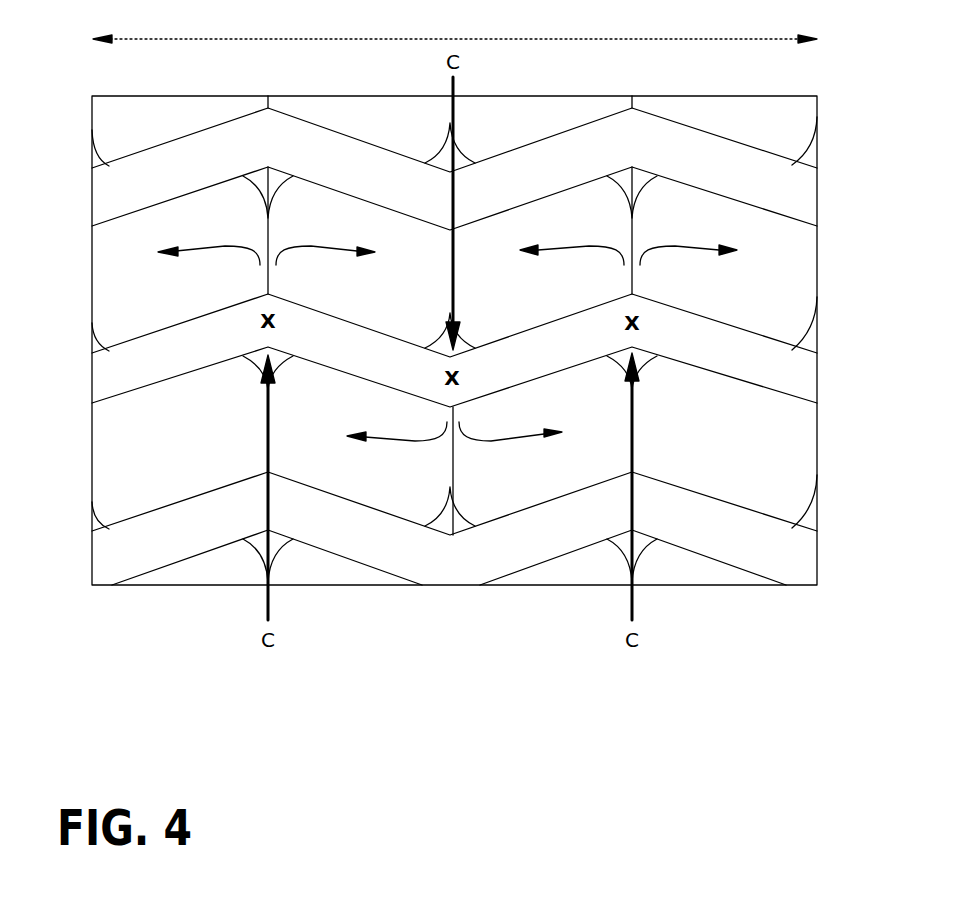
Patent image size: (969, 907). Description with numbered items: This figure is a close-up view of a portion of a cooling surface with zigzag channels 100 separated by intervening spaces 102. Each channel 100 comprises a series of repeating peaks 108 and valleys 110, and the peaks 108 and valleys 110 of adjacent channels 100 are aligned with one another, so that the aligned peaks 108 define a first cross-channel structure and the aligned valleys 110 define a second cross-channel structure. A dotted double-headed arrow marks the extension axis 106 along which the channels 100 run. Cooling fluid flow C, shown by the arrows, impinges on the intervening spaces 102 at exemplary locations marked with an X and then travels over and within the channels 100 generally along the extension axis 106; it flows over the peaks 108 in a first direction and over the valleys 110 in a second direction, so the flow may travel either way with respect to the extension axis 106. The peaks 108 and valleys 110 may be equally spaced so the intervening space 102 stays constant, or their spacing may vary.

The channels 100 is at (785, 281).
The intervening spaces 102 is at (788, 203).
The extension axis 106 is at (477, 38).
The peaks 108 is at (280, 208).
The valleys 110 is at (463, 262).